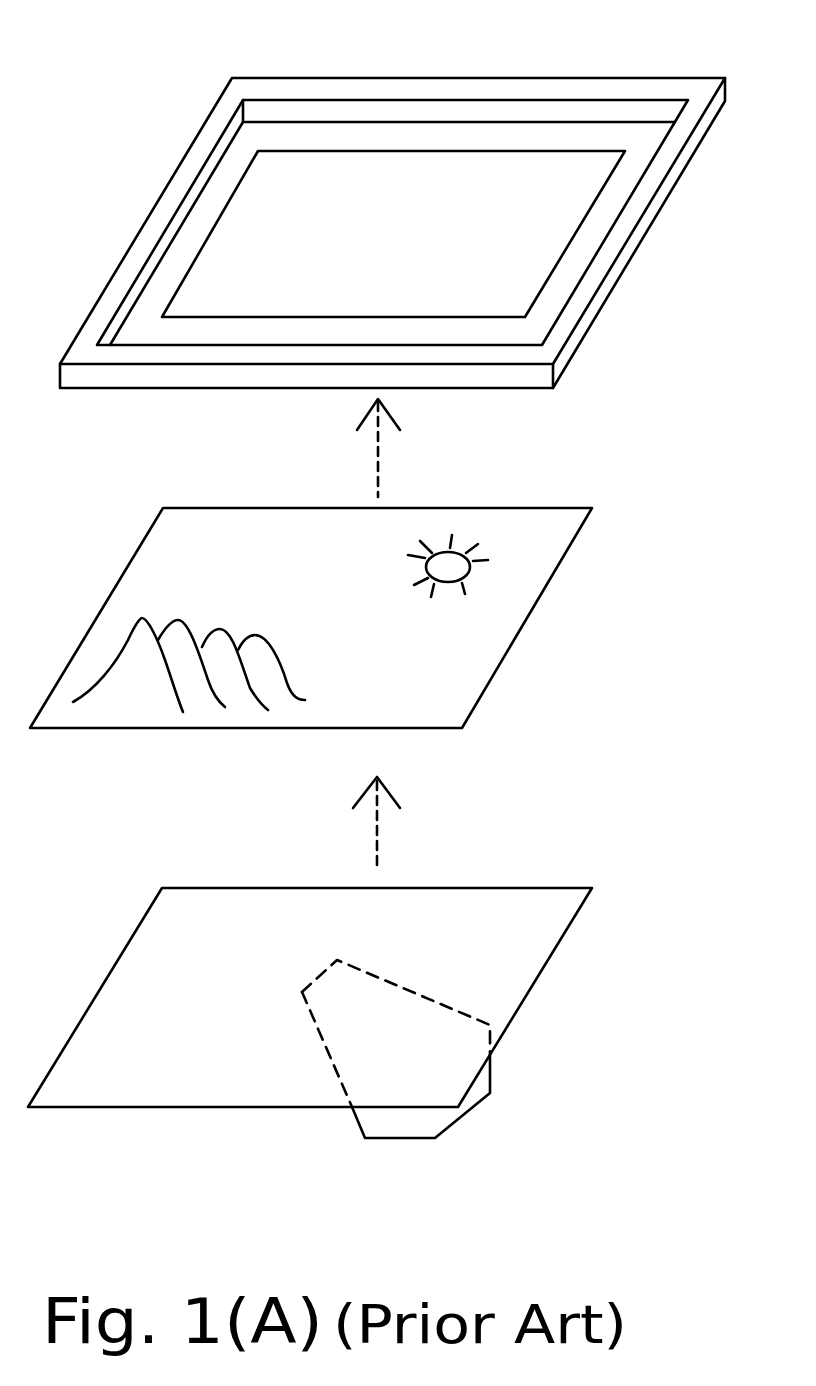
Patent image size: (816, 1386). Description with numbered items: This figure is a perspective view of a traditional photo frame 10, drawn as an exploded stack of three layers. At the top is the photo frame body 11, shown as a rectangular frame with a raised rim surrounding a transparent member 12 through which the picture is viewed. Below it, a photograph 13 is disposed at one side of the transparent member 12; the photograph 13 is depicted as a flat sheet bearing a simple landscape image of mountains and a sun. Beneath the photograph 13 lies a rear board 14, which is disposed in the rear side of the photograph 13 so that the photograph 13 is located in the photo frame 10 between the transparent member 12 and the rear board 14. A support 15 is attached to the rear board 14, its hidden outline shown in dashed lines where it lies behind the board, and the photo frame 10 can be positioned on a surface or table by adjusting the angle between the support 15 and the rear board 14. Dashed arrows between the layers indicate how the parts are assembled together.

The photo frame 10 is at (161, 49).
The photo frame body 11 is at (672, 183).
The transparent member 12 is at (418, 170).
The photograph 13 is at (510, 648).
The rear board 14 is at (530, 988).
The support 15 is at (472, 1108).